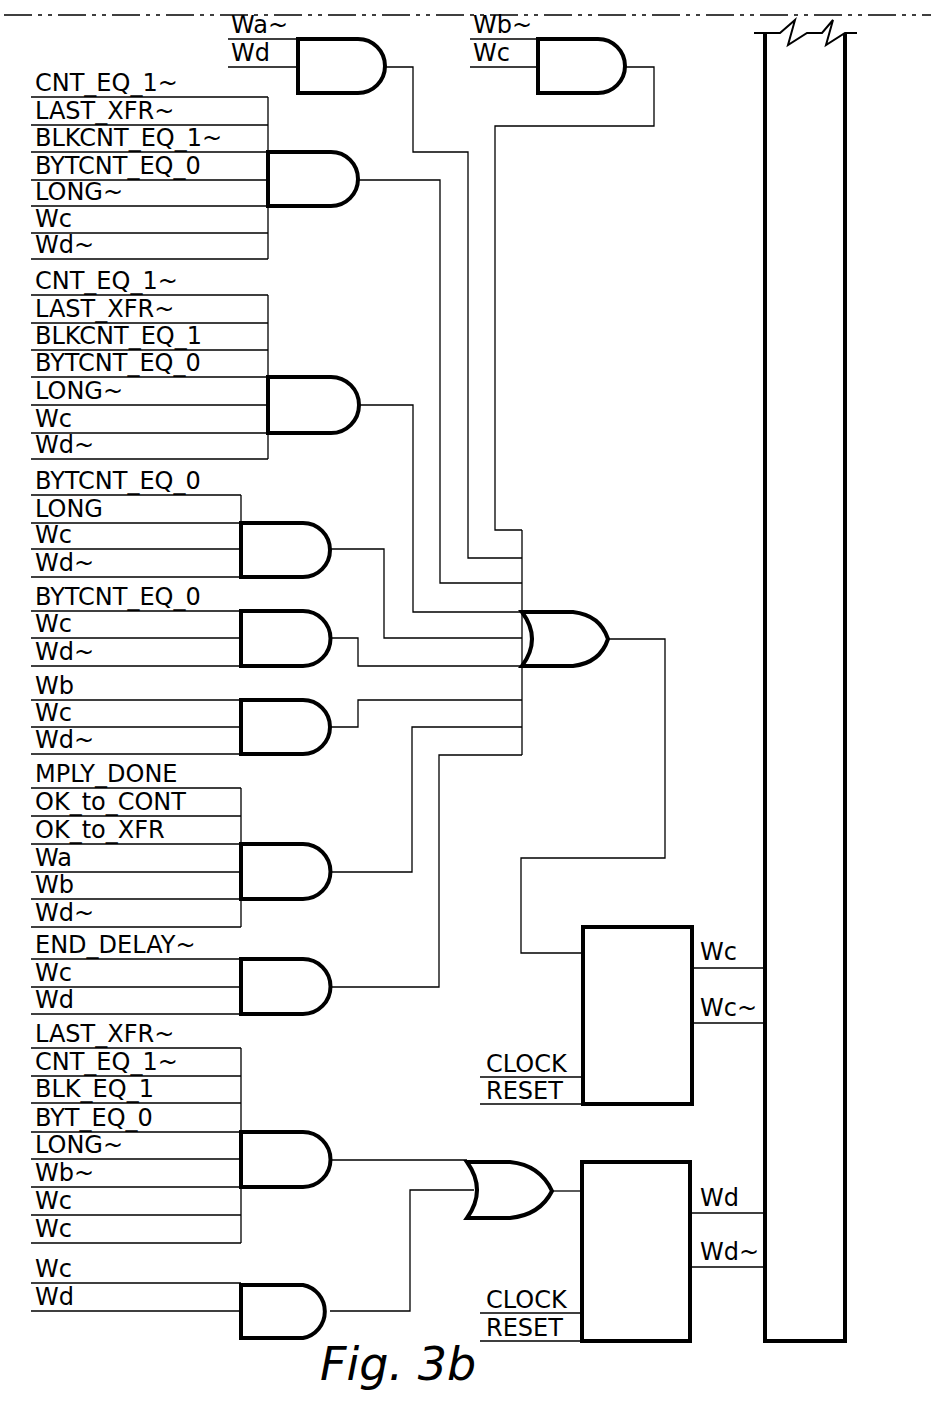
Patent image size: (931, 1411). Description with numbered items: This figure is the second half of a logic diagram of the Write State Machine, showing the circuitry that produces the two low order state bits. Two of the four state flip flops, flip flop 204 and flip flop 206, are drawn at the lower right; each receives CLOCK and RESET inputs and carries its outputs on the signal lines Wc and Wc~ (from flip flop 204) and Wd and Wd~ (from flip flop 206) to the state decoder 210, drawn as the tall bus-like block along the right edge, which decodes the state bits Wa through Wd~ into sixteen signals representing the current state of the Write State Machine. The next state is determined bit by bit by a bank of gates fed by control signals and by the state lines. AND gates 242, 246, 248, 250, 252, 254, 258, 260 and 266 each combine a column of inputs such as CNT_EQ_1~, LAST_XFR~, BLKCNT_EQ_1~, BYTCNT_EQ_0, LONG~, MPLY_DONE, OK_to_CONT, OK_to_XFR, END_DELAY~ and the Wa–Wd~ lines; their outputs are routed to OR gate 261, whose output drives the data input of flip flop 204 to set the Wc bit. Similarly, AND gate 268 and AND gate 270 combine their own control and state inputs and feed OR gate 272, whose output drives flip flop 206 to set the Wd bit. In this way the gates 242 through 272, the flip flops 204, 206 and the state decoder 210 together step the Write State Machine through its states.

The gate 242 is at (313, 93).
The gate 246 is at (592, 39).
The gate 248 is at (300, 207).
The gate 250 is at (292, 378).
The gate 252 is at (263, 522).
The gate 254 is at (265, 611).
The gate 258 is at (275, 755).
The gate 260 is at (258, 844).
The gate 261 is at (548, 612).
The gate 266 is at (283, 1014).
The gate 268 is at (270, 1132).
The gate 270 is at (258, 1285).
The gate 272 is at (507, 1162).
The flip flop 204 is at (583, 985).
The flip flop 206 is at (582, 1228).
The state decoder 210 is at (765, 418).